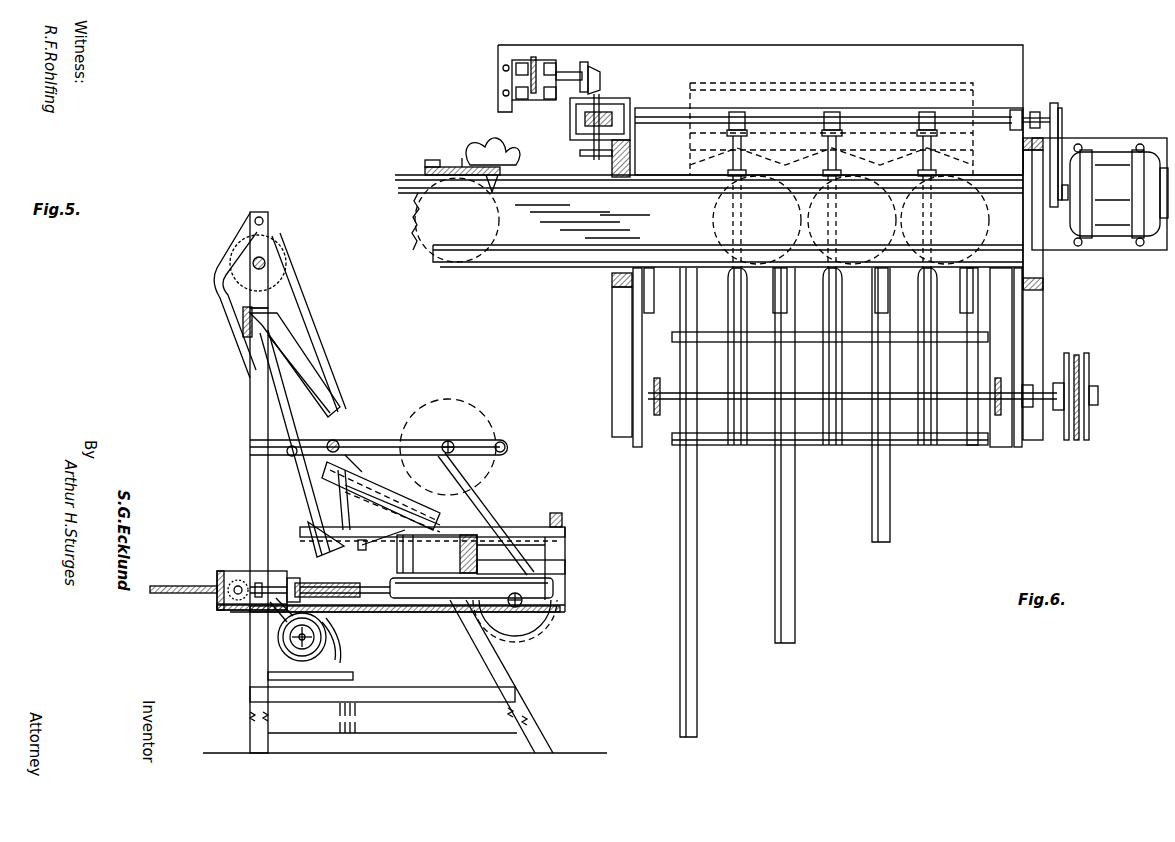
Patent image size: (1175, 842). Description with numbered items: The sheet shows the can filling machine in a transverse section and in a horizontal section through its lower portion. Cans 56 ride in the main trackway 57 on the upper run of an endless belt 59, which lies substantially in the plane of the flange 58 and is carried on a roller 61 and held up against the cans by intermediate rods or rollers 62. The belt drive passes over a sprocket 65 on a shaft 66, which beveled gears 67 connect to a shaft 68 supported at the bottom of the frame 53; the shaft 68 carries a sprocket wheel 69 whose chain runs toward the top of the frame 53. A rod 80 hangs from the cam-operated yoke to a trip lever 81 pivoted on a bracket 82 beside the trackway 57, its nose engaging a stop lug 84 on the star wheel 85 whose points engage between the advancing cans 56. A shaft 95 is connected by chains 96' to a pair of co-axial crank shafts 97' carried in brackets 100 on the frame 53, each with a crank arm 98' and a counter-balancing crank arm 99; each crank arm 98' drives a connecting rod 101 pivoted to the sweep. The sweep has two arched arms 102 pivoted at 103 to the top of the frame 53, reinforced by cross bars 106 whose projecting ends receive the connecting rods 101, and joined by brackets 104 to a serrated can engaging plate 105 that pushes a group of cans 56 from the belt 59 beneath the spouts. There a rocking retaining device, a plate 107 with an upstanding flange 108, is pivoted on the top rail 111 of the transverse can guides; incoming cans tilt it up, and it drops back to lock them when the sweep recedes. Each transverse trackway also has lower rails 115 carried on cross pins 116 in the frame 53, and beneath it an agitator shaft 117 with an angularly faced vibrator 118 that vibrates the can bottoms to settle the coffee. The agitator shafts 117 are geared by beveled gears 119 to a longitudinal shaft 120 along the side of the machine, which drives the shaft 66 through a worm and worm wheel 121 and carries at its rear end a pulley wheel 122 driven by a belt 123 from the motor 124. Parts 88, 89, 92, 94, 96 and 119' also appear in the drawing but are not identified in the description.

In FIG. 5, the frame 53 is at (300, 322).
In FIG. 6, the frame 53 is at (1030, 138).
In FIG. 5, the can 56 is at (562, 535).
In FIG. 6, the can 56 is at (712, 218).
In FIG. 6, the trackway 57 is at (512, 268).
In FIG. 6, the flange 58 is at (563, 183).
In FIG. 5, the endless belt 59 is at (350, 612).
In FIG. 6, the endless belt 59 is at (578, 232).
In FIG. 6, the roller 61 is at (1043, 258).
In FIG. 6, the rods or rollers 62 is at (438, 264).
In FIG. 6, the sprocket 65 is at (580, 153).
In FIG. 6, the shaft 66 is at (603, 92).
In FIG. 6, the beveled gears 67 is at (594, 72).
In FIG. 6, the shaft 68 is at (568, 70).
In FIG. 6, the sprocket wheel 69 is at (533, 58).
In FIG. 6, the rod 80 is at (462, 166).
In FIG. 6, the trip lever 81 is at (430, 160).
In FIG. 6, the bracket 82 is at (424, 170).
In FIG. 6, the stop lug 84 is at (486, 160).
In FIG. 6, the star wheel 85 is at (496, 172).
In FIG. 5, the wheel 88 is at (272, 255).
In FIG. 5, the strut 89 is at (300, 296).
In FIG. 5, the pivot 92 is at (322, 425).
In FIG. 6, the shaft 94 is at (1077, 355).
In FIG. 5, the shaft 95 is at (523, 610).
In FIG. 6, the shaft 95 is at (665, 405).
In FIG. 5, the pulley 96 is at (516, 633).
In FIG. 6, the pulley 96 is at (1086, 408).
In FIG. 5, the chains 96' is at (486, 514).
In FIG. 5, the crank shaft 97' is at (265, 442).
In FIG. 5, the crank arm 98' is at (506, 429).
In FIG. 5, the counter-balancing crank arm 99 is at (412, 415).
In FIG. 5, the bracket 100 is at (390, 445).
In FIG. 5, the connecting rod 101 is at (360, 442).
In FIG. 5, the arm 102 is at (236, 305).
In FIG. 6, the arm 102 is at (700, 74).
In FIG. 5, the pivot 103 is at (259, 214).
In FIG. 5, the bracket 104 is at (318, 540).
In FIG. 6, the bracket 104 is at (742, 90).
In FIG. 5, the can engaging plate 105 is at (378, 555).
In FIG. 6, the can engaging plate 105 is at (695, 160).
In FIG. 5, the cross bar 106 is at (288, 450).
In FIG. 5, the plate 107 is at (455, 552).
In FIG. 5, the upstanding flange 108 is at (340, 508).
In FIG. 5, the top rail 111 is at (522, 527).
In FIG. 6, the top rail 111 is at (692, 380).
In FIG. 5, the lower rail 115 is at (548, 568).
In FIG. 6, the lower rail 115 is at (970, 296).
In FIG. 5, the cross pin 116 is at (568, 600).
In FIG. 6, the cross pin 116 is at (995, 448).
In FIG. 5, the agitator shaft 117 is at (380, 602).
In FIG. 6, the agitator shaft 117 is at (828, 150).
In FIG. 5, the vibrator 118 is at (428, 600).
In FIG. 6, the vibrator 118 is at (830, 292).
In FIG. 5, the beveled gears 119 is at (247, 563).
In FIG. 6, the beveled gears 119 is at (833, 93).
In FIG. 5, the plate 119' is at (395, 508).
In FIG. 5, the longitudinal shaft 120 is at (225, 598).
In FIG. 6, the longitudinal shaft 120 is at (810, 115).
In FIG. 6, the worm and worm wheel 121 is at (612, 118).
In FIG. 6, the pulley wheel 122 is at (1058, 116).
In FIG. 5, the belt 123 is at (278, 630).
In FIG. 6, the belt 123 is at (1062, 138).
In FIG. 5, the motor 124 is at (330, 660).
In FIG. 6, the motor 124 is at (1140, 160).